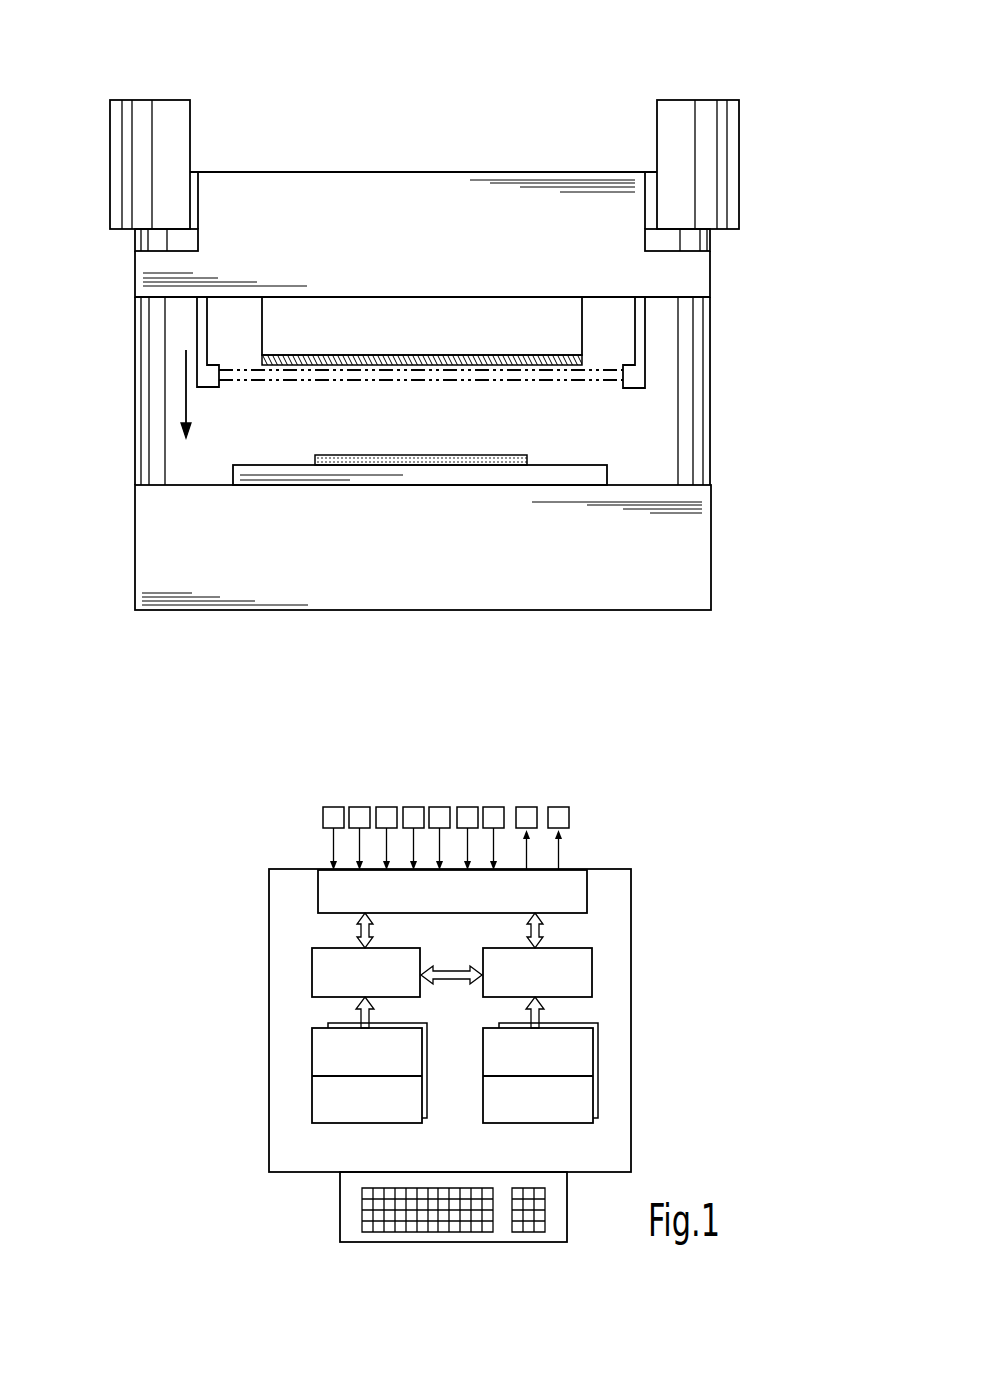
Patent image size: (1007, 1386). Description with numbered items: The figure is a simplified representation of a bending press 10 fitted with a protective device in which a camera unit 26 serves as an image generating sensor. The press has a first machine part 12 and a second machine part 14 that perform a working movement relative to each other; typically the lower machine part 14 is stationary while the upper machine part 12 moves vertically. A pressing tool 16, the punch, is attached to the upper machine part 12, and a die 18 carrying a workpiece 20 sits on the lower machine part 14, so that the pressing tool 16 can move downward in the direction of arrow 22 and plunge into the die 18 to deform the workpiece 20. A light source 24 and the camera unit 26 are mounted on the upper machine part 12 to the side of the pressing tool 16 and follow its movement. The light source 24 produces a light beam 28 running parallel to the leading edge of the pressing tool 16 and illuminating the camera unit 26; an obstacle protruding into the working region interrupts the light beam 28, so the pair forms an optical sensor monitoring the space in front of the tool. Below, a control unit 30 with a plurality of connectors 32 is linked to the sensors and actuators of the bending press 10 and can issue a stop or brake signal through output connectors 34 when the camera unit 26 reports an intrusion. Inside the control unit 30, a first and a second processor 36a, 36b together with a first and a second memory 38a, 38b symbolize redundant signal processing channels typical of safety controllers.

The bending press 10 is at (425, 99).
The first machine part 12 is at (485, 220).
The second machine part 14 is at (640, 560).
The pressing tool 16 is at (315, 325).
The die 18 is at (535, 478).
The workpiece 20 is at (398, 458).
The arrow 22 is at (186, 395).
The light source 24 is at (203, 375).
The camera unit 26 is at (638, 375).
The light beam 28 is at (290, 375).
The control unit 30 is at (633, 1132).
The connectors 32 is at (585, 800).
The output connectors 34 is at (570, 817).
The first processor 36a is at (322, 977).
The second processor 36b is at (578, 962).
The first memory 38a is at (311, 1073).
The second memory 38b is at (573, 1053).